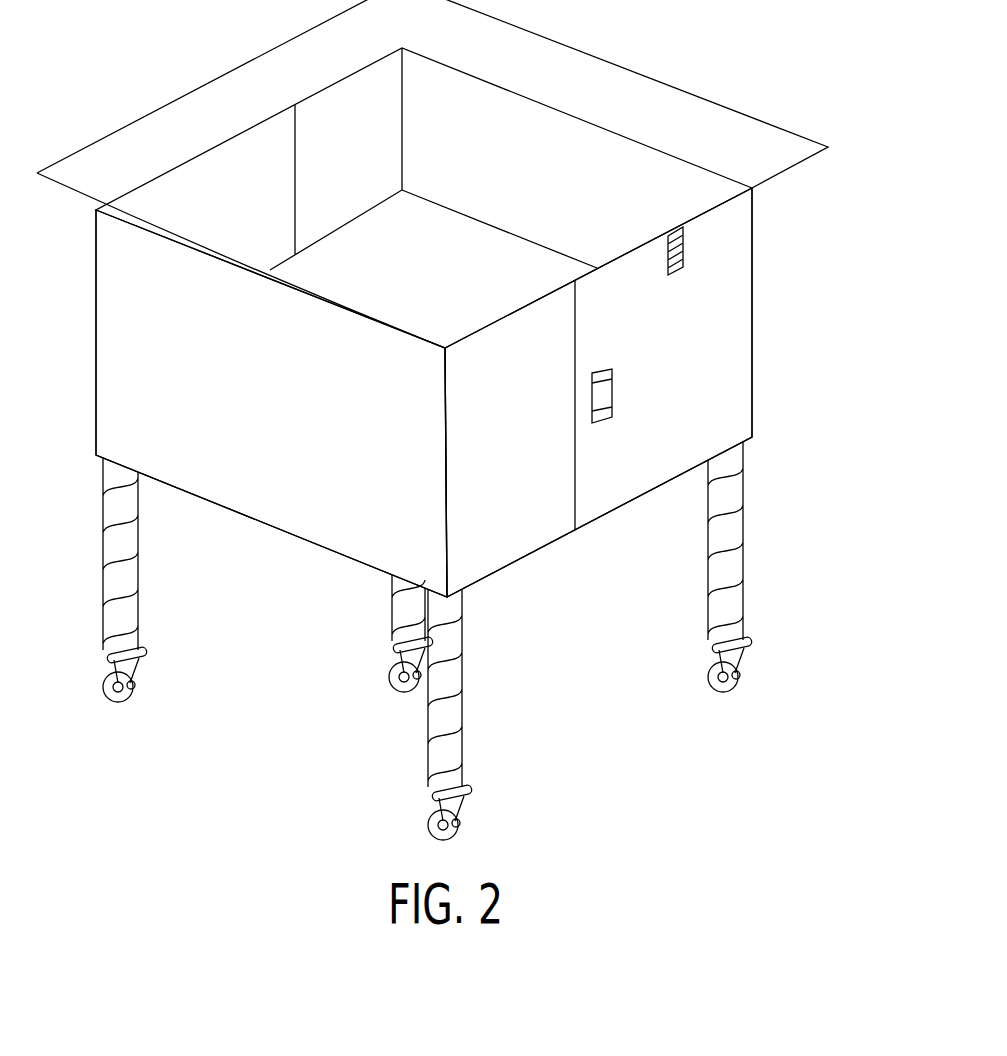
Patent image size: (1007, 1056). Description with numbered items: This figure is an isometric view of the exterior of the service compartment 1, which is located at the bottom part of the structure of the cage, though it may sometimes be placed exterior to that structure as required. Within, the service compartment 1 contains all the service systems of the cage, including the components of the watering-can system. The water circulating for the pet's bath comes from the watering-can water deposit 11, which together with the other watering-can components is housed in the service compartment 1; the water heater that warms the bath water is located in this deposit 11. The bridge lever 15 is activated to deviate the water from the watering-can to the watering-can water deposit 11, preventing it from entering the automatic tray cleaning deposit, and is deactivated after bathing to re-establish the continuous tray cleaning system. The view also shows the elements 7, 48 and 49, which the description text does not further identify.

The service compartment 1 is at (248, 219).
The caster leg 7 is at (138, 673).
The watering-can water deposit 11 is at (683, 245).
The bridge lever 15 is at (393, 505).
The side wall 48 is at (752, 333).
The interior compartment 49 is at (365, 138).